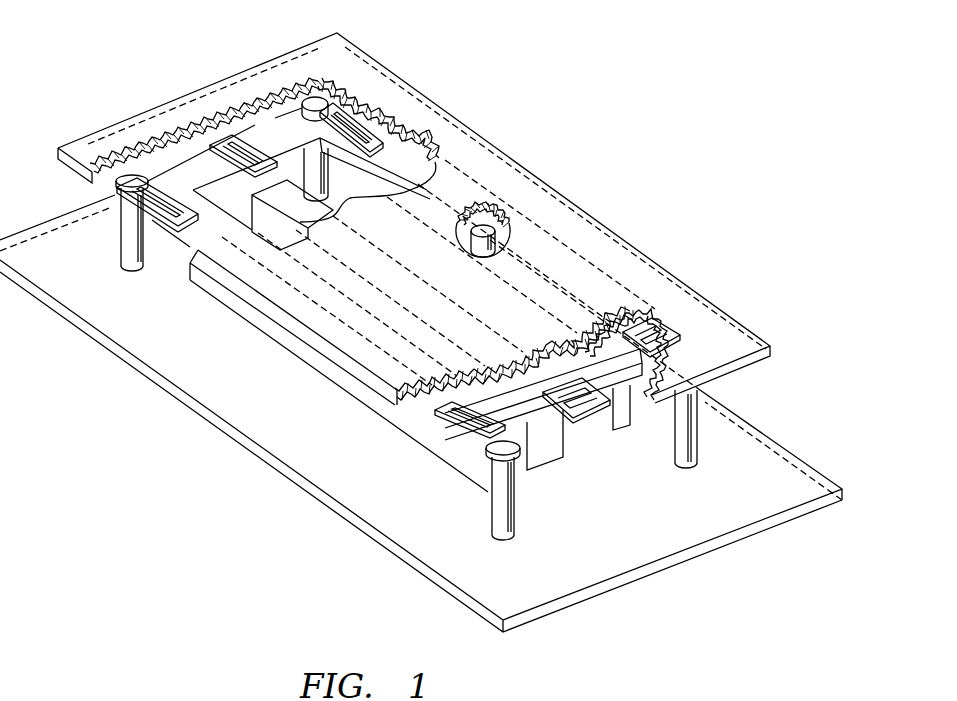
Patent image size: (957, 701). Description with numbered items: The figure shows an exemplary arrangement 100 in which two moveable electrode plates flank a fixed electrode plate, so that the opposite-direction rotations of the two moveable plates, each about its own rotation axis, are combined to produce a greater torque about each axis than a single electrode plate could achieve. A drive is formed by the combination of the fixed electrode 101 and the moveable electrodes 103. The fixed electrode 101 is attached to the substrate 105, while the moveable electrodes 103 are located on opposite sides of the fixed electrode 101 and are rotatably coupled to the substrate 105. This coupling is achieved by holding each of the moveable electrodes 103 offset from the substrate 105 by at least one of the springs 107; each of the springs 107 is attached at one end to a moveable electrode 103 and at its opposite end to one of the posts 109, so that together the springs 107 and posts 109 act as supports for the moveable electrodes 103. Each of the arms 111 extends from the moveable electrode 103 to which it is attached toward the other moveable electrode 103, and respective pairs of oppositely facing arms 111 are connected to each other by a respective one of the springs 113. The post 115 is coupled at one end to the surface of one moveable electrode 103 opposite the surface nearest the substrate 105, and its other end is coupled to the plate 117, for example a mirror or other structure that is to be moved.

The arrangement 100 is at (641, 86).
The fixed electrode 101 is at (285, 200).
The moveable electrodes 103 is at (307, 353).
The substrate 105 is at (240, 417).
The springs 107 is at (168, 232).
The posts 109 is at (123, 173).
The arms 111 is at (205, 173).
The springs 113 is at (233, 133).
The post 115 is at (502, 224).
The plate 117 is at (748, 336).